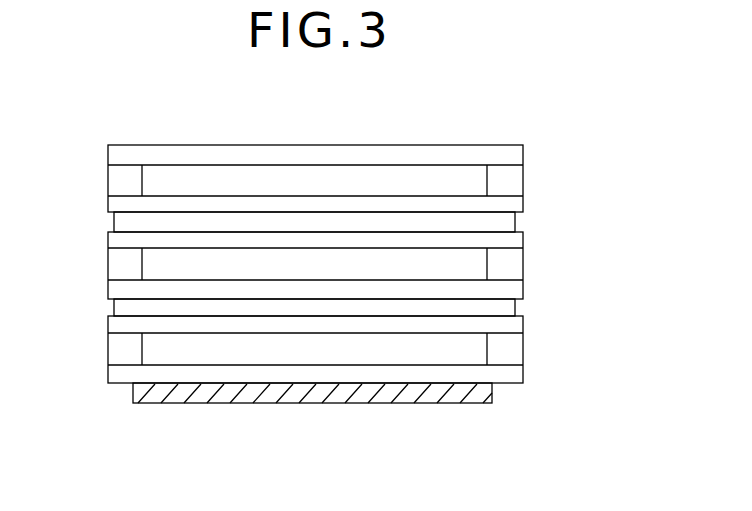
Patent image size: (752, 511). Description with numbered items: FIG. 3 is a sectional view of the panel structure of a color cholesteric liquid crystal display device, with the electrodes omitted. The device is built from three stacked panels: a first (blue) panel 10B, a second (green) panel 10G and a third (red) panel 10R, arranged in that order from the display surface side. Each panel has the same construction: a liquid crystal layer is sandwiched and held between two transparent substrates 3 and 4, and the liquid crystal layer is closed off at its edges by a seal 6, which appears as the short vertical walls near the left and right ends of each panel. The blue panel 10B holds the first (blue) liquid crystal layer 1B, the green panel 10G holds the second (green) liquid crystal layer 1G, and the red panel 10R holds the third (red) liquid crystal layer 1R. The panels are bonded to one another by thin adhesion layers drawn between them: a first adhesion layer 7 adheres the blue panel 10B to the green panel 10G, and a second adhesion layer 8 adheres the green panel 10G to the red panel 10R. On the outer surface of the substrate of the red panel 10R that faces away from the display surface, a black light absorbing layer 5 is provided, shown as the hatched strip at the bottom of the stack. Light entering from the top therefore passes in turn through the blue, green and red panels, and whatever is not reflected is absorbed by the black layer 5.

The transparent substrate 3 is at (110, 152).
The seal 6 is at (110, 178).
The transparent substrate 4 is at (110, 204).
The black light absorbing layer 5 is at (132, 388).
The first adhesion layer 7 is at (515, 227).
The second adhesion layer 8 is at (515, 310).
The first (blue) liquid crystal layer 1B is at (434, 177).
The second (green) liquid crystal layer 1G is at (305, 260).
The third (red) liquid crystal layer 1R is at (385, 352).
The first (blue) panel 10B is at (548, 147).
The second (green) panel 10G is at (548, 233).
The third (red) panel 10R is at (548, 318).